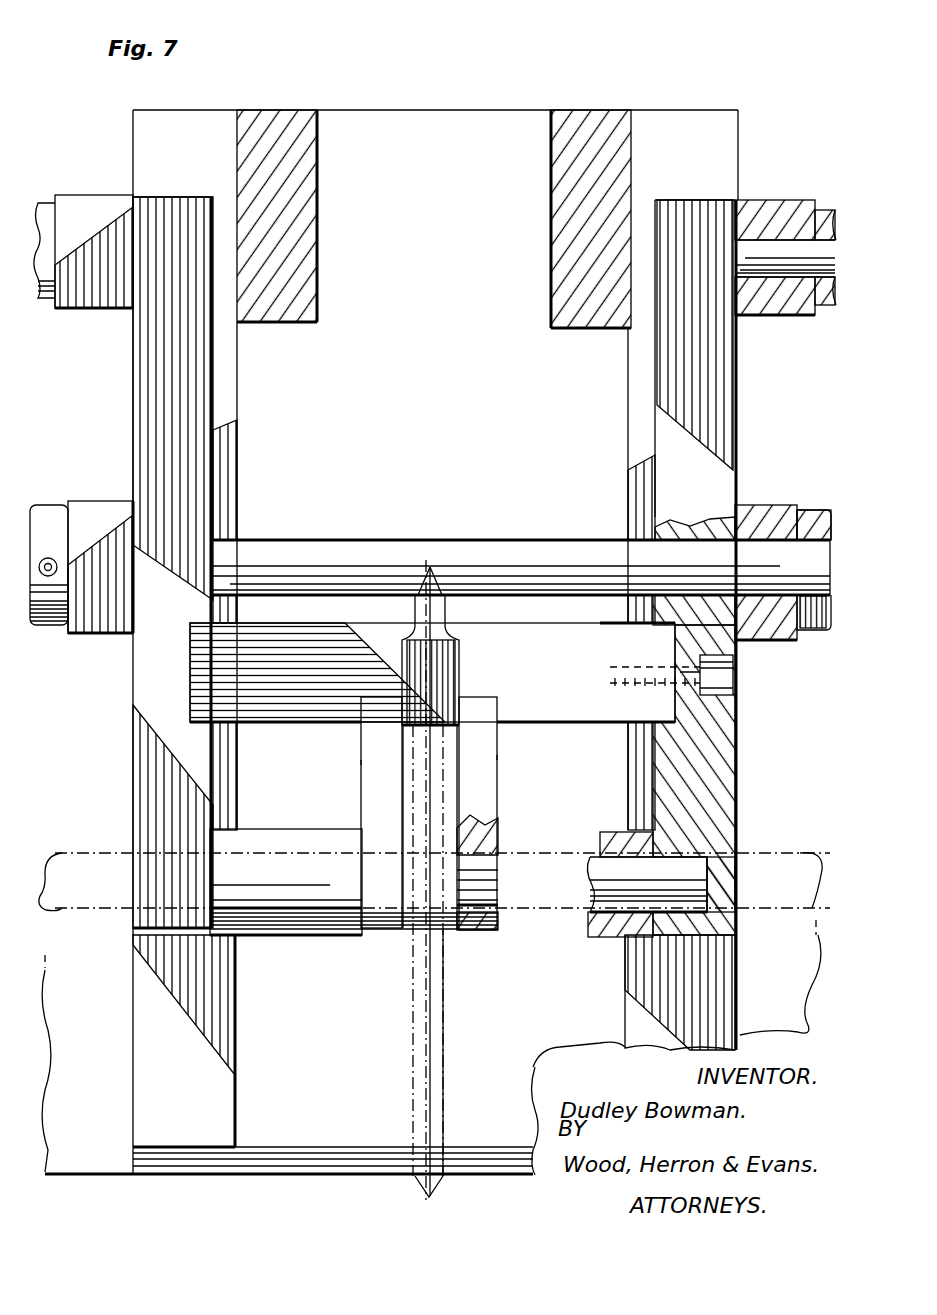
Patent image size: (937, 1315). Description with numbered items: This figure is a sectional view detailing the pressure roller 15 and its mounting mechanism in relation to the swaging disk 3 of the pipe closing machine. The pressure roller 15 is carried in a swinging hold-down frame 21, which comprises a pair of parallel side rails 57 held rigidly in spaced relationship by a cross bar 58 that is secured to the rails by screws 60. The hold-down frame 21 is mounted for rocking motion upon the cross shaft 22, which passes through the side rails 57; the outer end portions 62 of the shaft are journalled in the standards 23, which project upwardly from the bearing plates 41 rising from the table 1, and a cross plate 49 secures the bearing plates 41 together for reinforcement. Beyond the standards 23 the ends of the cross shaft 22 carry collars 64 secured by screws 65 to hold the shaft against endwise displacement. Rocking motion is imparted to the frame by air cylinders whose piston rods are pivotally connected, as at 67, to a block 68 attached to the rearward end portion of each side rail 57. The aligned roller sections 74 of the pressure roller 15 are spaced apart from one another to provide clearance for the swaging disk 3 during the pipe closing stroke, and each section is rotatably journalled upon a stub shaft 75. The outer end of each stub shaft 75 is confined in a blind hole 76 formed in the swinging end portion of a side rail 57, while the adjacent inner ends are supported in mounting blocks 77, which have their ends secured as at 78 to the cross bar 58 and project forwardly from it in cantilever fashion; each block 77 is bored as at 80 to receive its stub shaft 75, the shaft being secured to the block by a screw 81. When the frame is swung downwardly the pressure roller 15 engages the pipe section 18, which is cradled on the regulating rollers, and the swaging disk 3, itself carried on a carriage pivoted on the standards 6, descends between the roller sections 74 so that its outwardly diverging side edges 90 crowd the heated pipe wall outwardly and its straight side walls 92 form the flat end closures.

The table 1 is at (515, 1065).
The swaging disk 3 is at (455, 1046).
The standards 6 is at (300, 176).
The pressure roller 15 is at (316, 920).
The pipe section 18 is at (80, 845).
The hold-down frame 21 is at (195, 409).
The cross shaft 22 is at (312, 561).
The standards 23 is at (93, 522).
The bearing plates 41 is at (712, 989).
The cross plate 49 is at (330, 1147).
The side rails 57 is at (190, 467).
The cross bar 58 is at (432, 672).
The screws 60 is at (712, 680).
The outer end portions of the cross shaft 62 is at (763, 556).
The collars 64 is at (42, 618).
The screws 65 is at (48, 558).
The pivotal connection 67 is at (790, 252).
The block 68 is at (92, 216).
The roller sections 74 is at (270, 836).
The stub shafts 75 is at (686, 868).
The blind holes 76 is at (712, 886).
The mounting blocks 77 is at (368, 762).
The securing points of the mounting blocks 78 is at (380, 700).
The bore 80 is at (472, 826).
The screw 81 is at (470, 928).
The outwardly diverging side edges of the disk 90 is at (418, 1186).
The straight side walls of the disk 92 is at (413, 1062).